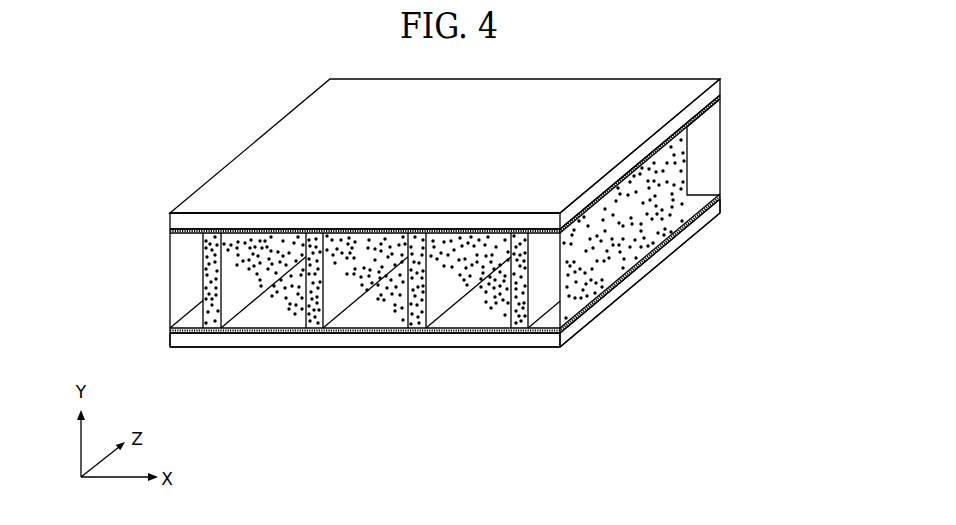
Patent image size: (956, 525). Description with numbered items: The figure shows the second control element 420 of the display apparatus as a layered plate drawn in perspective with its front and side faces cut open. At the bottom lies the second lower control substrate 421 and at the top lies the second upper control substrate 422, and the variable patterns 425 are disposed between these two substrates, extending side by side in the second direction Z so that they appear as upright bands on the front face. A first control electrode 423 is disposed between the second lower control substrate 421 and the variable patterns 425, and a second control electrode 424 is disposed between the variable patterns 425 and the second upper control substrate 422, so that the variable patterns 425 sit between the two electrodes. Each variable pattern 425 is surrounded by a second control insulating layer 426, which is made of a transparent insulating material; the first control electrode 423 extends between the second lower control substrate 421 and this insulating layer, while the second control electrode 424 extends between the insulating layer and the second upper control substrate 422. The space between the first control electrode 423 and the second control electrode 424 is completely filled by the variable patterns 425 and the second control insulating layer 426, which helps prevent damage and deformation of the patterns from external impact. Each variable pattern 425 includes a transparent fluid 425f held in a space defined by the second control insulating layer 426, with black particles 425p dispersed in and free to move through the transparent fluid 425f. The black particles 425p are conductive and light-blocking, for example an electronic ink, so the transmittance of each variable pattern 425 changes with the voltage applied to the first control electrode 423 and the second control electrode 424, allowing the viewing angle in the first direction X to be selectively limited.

The second control element 420 is at (798, 77).
The second lower control substrate 421 is at (712, 212).
The second upper control substrate 422 is at (716, 89).
The first control electrode 423 is at (719, 194).
The second control electrode 424 is at (717, 99).
The variable patterns 425 is at (695, 159).
The black particles 425p is at (196, 258).
The transparent fluid 425f is at (203, 287).
The second control insulating layer 426 is at (712, 132).